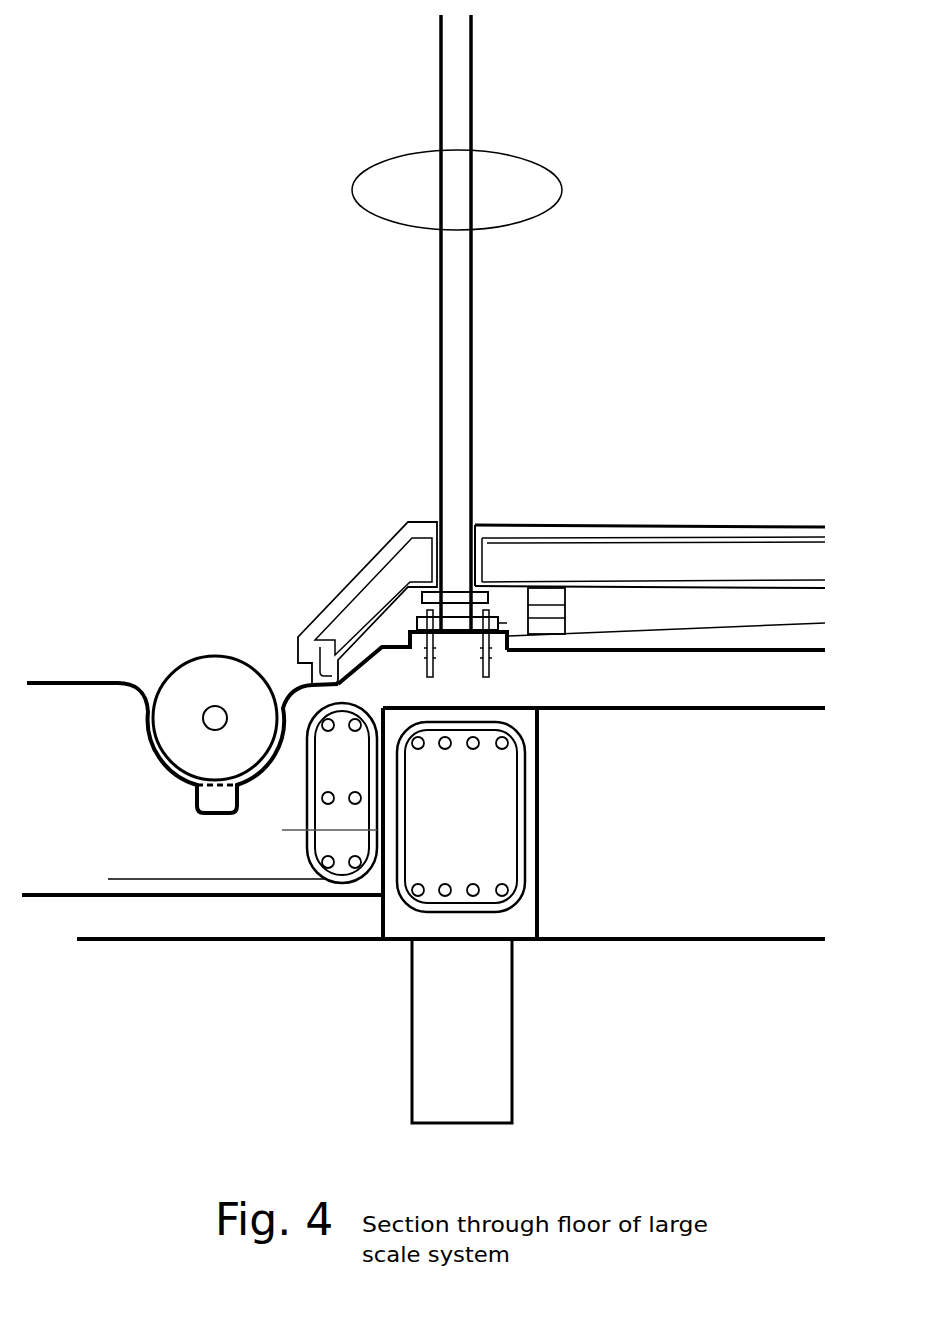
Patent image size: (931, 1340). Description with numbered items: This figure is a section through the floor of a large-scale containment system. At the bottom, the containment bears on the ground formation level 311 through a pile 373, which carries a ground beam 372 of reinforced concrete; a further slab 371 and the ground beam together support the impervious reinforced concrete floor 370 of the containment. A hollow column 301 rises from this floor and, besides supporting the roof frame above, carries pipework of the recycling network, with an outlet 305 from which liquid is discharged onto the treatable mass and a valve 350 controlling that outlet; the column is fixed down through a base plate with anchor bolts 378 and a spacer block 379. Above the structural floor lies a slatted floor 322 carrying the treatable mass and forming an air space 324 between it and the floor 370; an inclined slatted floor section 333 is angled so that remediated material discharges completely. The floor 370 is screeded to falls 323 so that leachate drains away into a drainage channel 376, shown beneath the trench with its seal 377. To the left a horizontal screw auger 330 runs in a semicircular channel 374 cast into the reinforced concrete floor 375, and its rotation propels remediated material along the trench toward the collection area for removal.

The hollow column 301 is at (458, 92).
The outlet 305 is at (545, 182).
The valve 350 is at (455, 595).
The anchor bolts 378 is at (485, 646).
The slatted floor 333 is at (367, 603).
The slatted floor 322 is at (672, 556).
The spacer block 379 is at (568, 611).
The air space 324 is at (667, 614).
The fall 323 is at (688, 637).
The reinforced concrete floor 370 is at (581, 670).
The semicircular channel 374 is at (182, 748).
The screw auger 330 is at (215, 718).
The drain seal 377 is at (212, 787).
The drainage channel 376 is at (212, 808).
The reinforced concrete floor 375 is at (202, 831).
The concrete slab 371 is at (508, 824).
The ground beam 372 is at (403, 807).
The ground formation level 311 is at (451, 987).
The pile 373 is at (462, 1031).